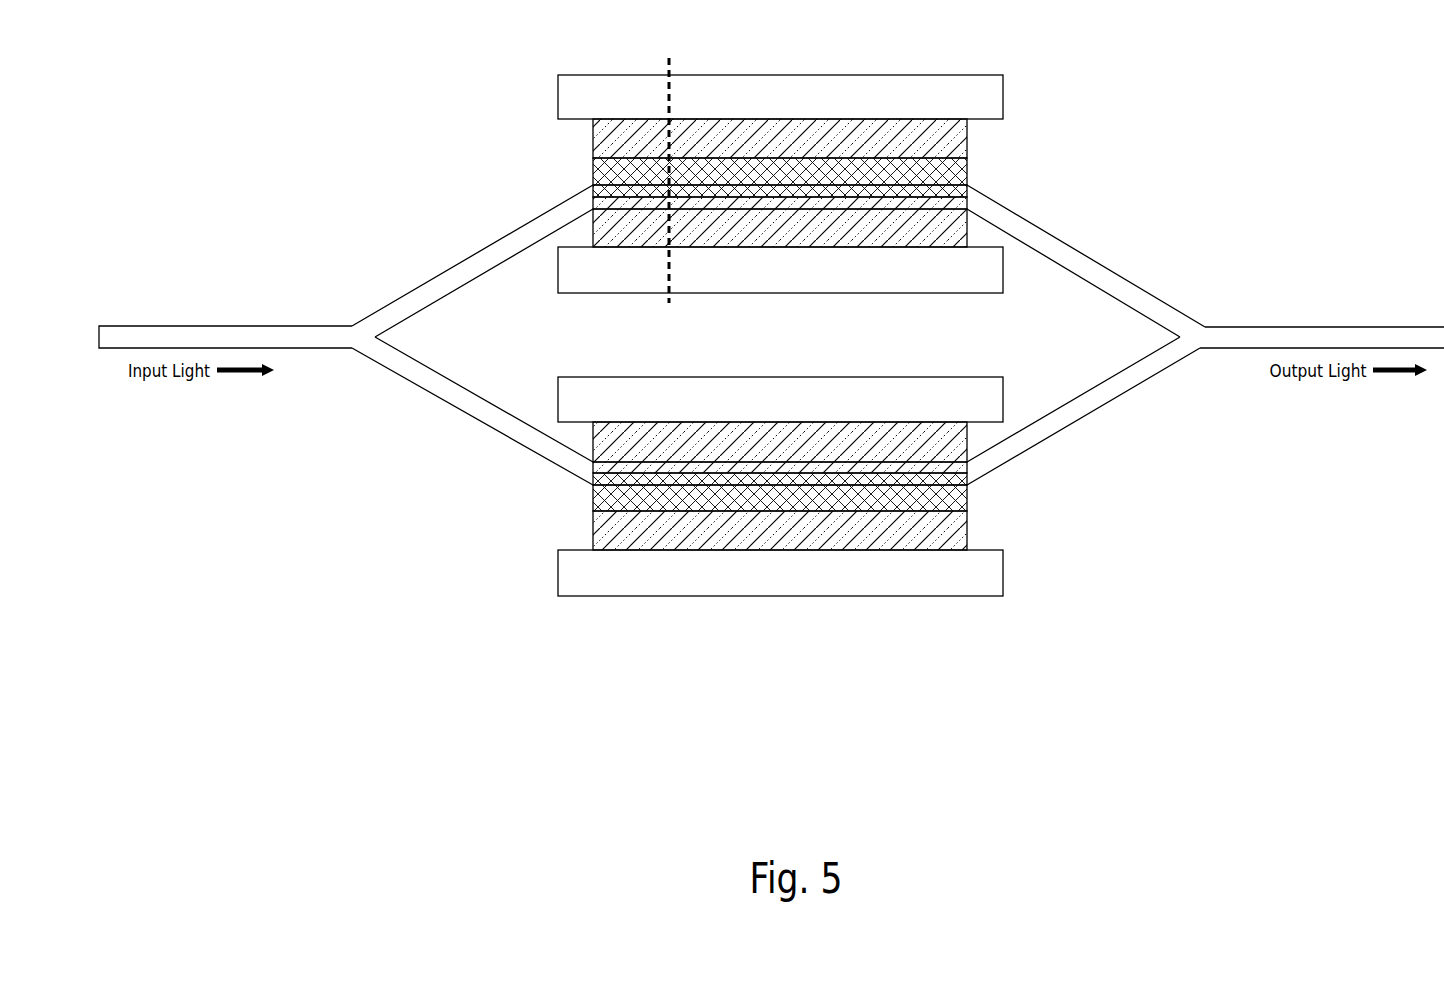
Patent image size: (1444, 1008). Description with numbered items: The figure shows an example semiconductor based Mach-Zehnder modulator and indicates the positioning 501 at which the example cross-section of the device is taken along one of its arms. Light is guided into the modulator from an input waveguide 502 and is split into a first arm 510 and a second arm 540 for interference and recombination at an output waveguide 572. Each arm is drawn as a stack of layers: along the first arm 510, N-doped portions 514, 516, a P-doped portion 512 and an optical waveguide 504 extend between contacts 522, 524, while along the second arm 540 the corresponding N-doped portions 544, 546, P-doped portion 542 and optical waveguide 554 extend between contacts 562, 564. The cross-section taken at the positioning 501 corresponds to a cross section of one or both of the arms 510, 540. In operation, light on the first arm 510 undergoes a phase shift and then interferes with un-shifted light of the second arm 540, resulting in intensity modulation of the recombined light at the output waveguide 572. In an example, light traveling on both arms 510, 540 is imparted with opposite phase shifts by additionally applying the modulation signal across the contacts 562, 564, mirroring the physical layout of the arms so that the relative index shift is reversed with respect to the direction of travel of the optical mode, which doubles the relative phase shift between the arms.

The positioning 501 is at (669, 60).
The input waveguide 502 is at (221, 347).
The optical waveguide 504 is at (964, 185).
The first arm 510 is at (810, 157).
The P-doped portion 512 is at (766, 181).
The N-doped portion 514 is at (766, 237).
The N-doped portion 516 is at (766, 144).
The contact 522 is at (766, 280).
The contact 524 is at (766, 107).
The second arm 540 is at (809, 456).
The P-doped portion 542 is at (766, 507).
The N-doped portion 544 is at (766, 450).
The N-doped portion 546 is at (766, 540).
The optical waveguide 554 is at (977, 479).
The contact 562 is at (766, 583).
The contact 564 is at (766, 410).
The output waveguide 572 is at (1311, 347).